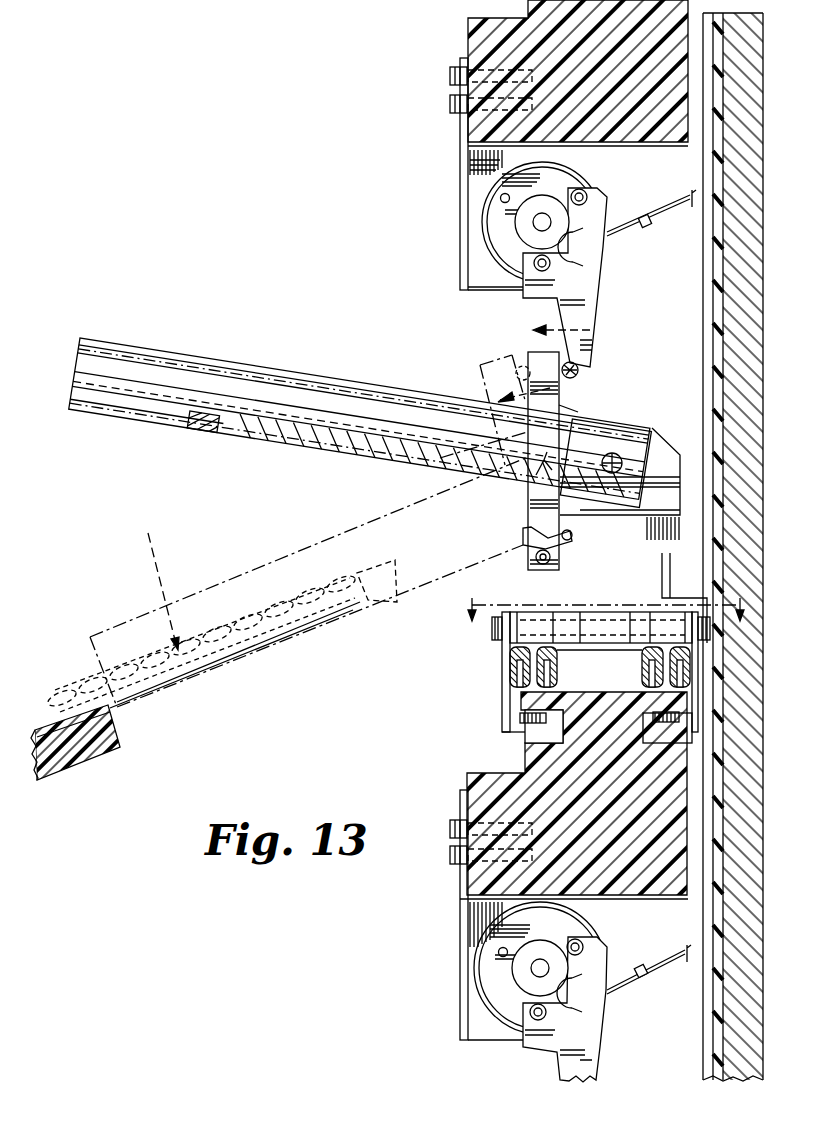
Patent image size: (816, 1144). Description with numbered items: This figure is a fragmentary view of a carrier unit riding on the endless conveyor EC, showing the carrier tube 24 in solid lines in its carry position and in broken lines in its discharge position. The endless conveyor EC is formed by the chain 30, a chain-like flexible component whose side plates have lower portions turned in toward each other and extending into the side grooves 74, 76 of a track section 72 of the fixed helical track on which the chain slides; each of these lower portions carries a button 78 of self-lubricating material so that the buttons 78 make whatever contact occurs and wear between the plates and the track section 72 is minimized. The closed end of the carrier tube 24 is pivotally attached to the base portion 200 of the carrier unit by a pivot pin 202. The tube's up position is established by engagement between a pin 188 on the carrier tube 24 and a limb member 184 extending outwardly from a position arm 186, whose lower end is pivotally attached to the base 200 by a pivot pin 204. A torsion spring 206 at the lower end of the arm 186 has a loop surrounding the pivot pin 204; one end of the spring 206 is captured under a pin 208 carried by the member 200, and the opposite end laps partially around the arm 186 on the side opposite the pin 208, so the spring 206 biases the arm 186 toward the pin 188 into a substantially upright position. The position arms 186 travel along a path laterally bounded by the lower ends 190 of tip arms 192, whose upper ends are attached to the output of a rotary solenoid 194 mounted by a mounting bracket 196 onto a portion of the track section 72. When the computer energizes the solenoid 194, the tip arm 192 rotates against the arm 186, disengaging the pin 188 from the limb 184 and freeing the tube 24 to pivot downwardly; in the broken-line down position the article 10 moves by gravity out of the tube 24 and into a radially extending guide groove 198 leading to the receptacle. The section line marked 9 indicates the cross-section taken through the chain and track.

The track section 72 is at (468, 42).
The side groove 74 is at (673, 738).
The side groove 76 is at (527, 740).
The button 78 is at (502, 712).
The section line 9- 9 is at (607, 621).
The article 10 is at (323, 430).
The carrier tube 24 is at (167, 370).
The chain 30 is at (445, 750).
The endless conveyor EC is at (434, 761).
The limb member 184 is at (621, 475).
The position arm 186 is at (552, 388).
The pin 188 is at (580, 413).
The lower end 190 is at (580, 373).
The tip arm 192 is at (590, 302).
The rotary solenoid 194 is at (495, 210).
The mounting bracket 196 is at (460, 262).
The guide groove 198 is at (92, 760).
The base portion 200 is at (640, 593).
The pivot pin 202 is at (620, 453).
The pivot pin 204 is at (523, 545).
The torsion spring 206 is at (551, 555).
The pin 208 is at (573, 535).